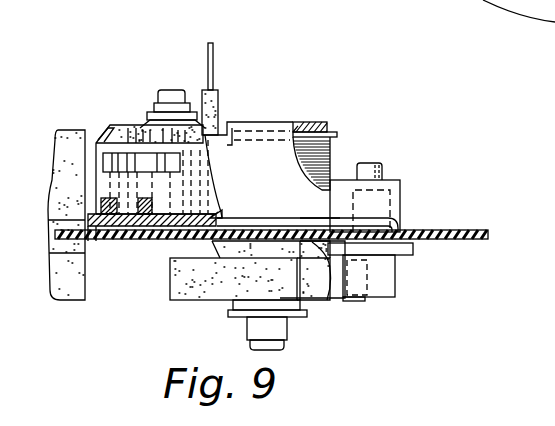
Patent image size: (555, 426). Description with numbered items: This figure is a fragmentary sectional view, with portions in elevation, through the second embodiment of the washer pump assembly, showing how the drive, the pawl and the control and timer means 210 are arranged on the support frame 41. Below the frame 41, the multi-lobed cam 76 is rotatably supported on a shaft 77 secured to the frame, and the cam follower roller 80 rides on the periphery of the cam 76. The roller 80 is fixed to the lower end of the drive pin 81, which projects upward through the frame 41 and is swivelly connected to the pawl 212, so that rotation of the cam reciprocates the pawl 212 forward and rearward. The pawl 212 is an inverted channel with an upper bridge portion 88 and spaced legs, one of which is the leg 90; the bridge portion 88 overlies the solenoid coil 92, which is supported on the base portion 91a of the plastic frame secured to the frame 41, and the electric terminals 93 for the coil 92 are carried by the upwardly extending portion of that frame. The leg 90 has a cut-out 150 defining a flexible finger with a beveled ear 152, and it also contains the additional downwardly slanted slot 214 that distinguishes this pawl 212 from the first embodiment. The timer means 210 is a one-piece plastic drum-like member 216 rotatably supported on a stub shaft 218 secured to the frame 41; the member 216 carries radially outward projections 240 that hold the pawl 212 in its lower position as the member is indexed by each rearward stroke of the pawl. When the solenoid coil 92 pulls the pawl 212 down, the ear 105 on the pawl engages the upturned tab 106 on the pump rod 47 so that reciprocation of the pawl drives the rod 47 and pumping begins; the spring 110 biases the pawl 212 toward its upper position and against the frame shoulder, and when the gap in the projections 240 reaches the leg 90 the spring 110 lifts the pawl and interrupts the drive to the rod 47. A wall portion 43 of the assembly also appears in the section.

The support frame 41 is at (467, 233).
The side wall 43 is at (67, 145).
The leg 90 is at (100, 180).
The projections 240 is at (110, 138).
The drum-like member 216 is at (157, 132).
The slot 214 is at (133, 157).
The control and timer means 210 is at (164, 122).
The stub shaft 218 is at (167, 114).
The electric terminals 93 is at (213, 60).
The base portion 91a is at (250, 127).
The cut-out 150 is at (137, 197).
The pump rod 47 is at (213, 214).
The bridge portion 88 is at (313, 128).
The solenoid coil 92 is at (318, 165).
The drive pin 81 is at (378, 162).
The pawl 212 is at (402, 192).
The spring 110 is at (400, 222).
The beveled ear 152 is at (98, 200).
The upturned tab 106 is at (137, 220).
The ear 105 is at (103, 215).
The multi-lobed cam 76 is at (207, 288).
The cam follower roller 80 is at (387, 282).
The shaft 77 is at (267, 328).